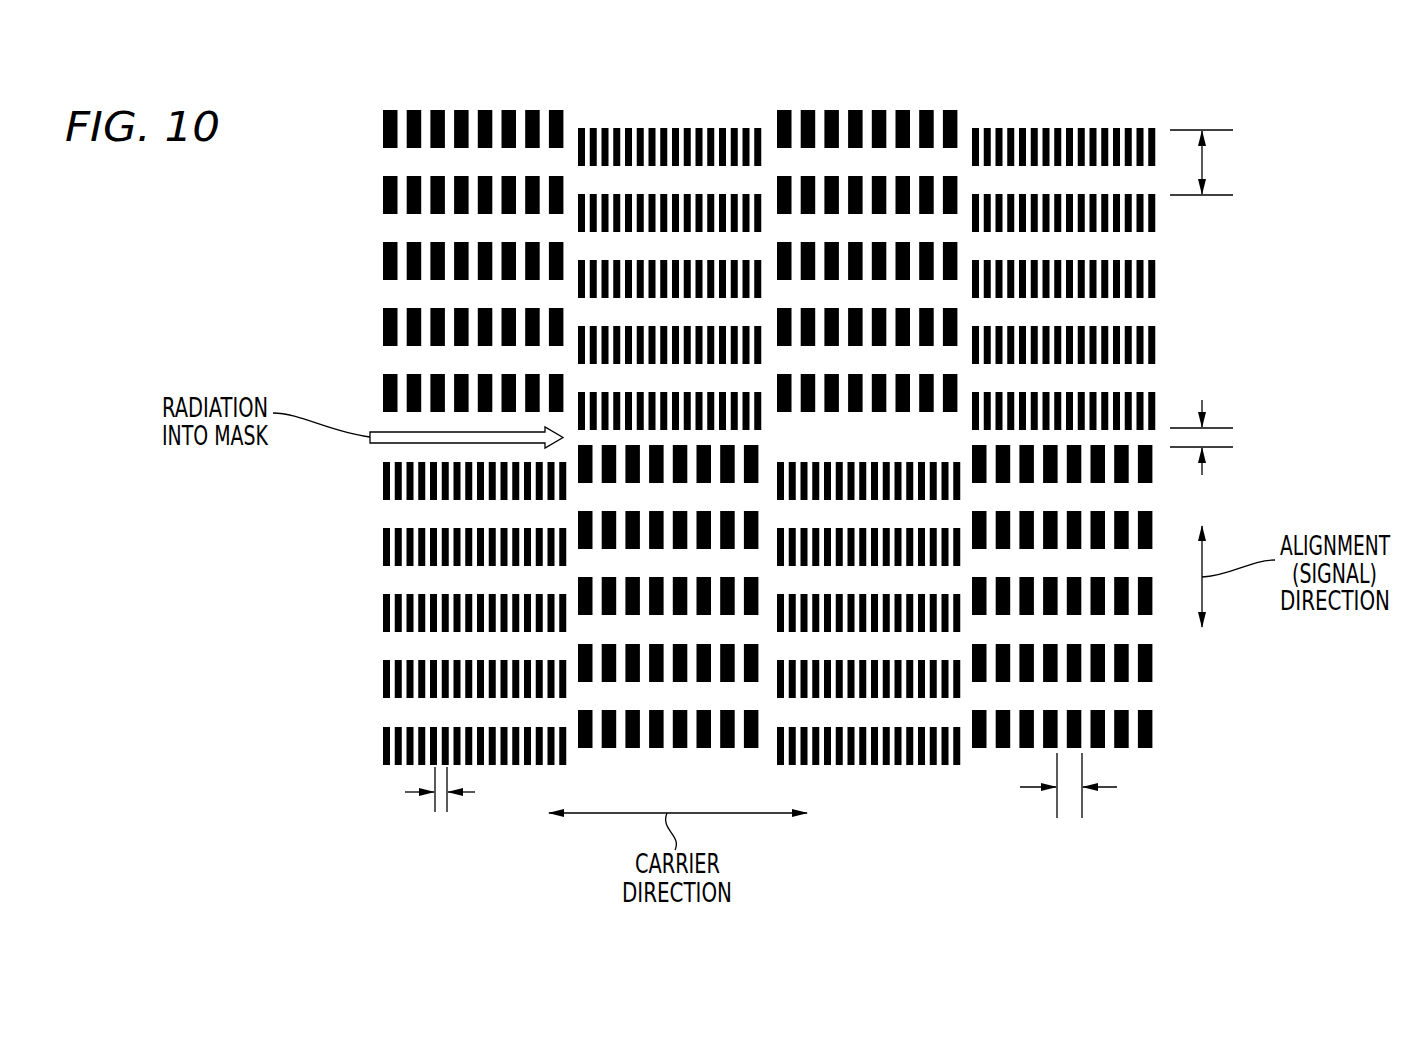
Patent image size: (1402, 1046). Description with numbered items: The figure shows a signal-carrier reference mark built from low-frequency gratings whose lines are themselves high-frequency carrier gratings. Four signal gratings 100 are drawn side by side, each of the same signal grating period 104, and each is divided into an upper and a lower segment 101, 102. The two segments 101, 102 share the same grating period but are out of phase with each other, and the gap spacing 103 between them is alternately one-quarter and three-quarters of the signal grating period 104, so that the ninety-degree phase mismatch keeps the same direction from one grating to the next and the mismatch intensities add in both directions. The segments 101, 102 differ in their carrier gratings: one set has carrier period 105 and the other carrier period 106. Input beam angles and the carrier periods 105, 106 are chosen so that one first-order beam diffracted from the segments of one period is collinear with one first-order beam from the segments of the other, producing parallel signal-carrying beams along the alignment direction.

The signal grating 100 is at (563, 80).
The signal grating segment 101 is at (343, 97).
The signal grating segment 102 is at (343, 450).
The gap spacing 103 is at (1225, 437).
The signal grating period 104 is at (1202, 160).
The carrier period 105 is at (441, 812).
The carrier period 106 is at (1067, 807).